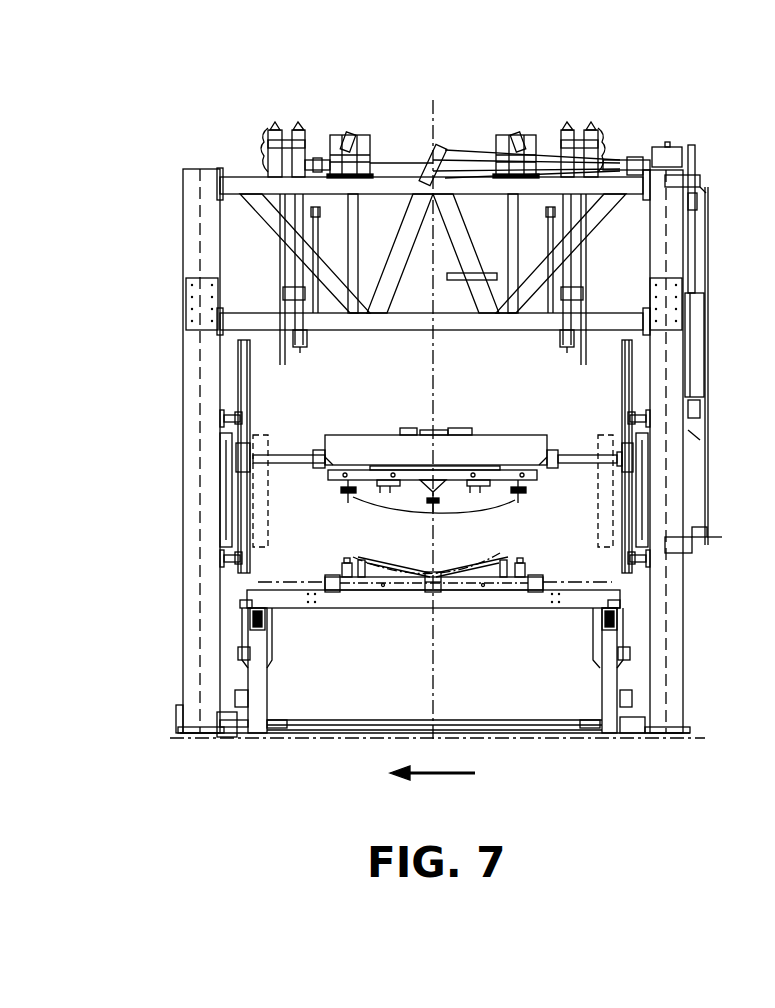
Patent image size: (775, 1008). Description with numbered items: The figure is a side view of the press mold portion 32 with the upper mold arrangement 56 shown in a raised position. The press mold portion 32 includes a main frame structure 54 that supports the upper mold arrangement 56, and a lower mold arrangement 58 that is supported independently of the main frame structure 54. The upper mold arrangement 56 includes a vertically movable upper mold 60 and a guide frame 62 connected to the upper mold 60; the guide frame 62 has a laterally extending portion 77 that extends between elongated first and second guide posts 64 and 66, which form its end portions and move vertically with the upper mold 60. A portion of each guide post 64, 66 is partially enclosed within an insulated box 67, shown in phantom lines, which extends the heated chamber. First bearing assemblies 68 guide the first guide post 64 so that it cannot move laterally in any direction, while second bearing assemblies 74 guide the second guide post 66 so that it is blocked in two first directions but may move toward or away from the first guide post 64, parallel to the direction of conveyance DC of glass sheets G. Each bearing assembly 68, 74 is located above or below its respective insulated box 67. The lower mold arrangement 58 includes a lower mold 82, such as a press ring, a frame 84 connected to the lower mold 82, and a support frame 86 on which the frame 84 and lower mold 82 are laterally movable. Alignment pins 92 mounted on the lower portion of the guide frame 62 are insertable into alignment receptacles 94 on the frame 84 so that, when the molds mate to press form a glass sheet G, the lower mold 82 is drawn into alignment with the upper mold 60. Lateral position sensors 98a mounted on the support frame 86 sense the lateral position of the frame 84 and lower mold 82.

The press mold portion 32 is at (205, 98).
The main frame structure 54 is at (176, 363).
The upper mold arrangement 56 is at (234, 514).
The lower mold arrangement 58 is at (233, 675).
The upper mold 60 is at (443, 493).
The guide frame 62 is at (320, 473).
The first guide post 64 is at (621, 386).
The second guide post 66 is at (250, 388).
The insulated box 67 is at (270, 543).
The first bearing assembly 68 is at (610, 403).
The second bearing assembly 74 is at (215, 403).
The laterally extending portion 77 is at (287, 450).
The lower mold 82 is at (392, 562).
The frame 84 is at (632, 592).
The support frame 86 is at (263, 620).
The alignment pin 92 is at (515, 500).
The alignment receptacle 94 is at (527, 562).
The lateral position sensor 98a is at (245, 602).
The glass sheet G is at (500, 553).
The direction of conveyance DC is at (420, 774).